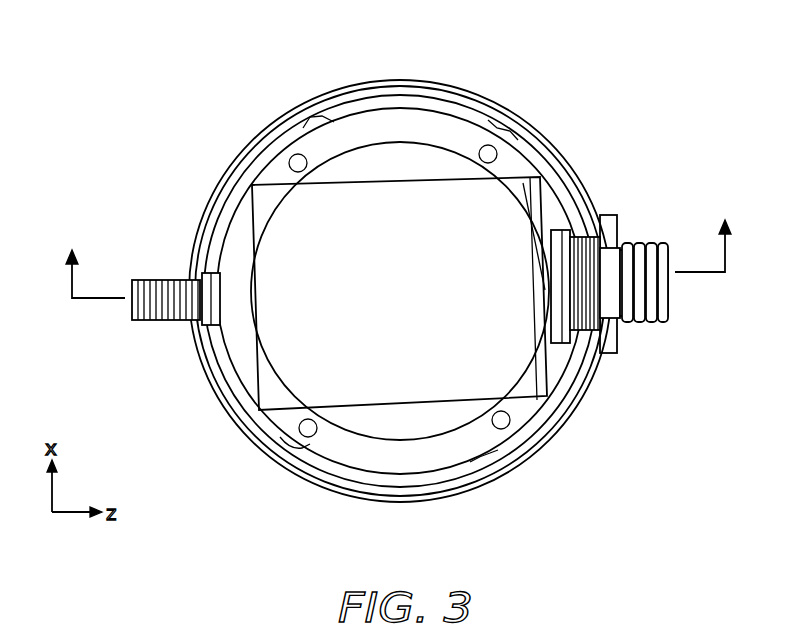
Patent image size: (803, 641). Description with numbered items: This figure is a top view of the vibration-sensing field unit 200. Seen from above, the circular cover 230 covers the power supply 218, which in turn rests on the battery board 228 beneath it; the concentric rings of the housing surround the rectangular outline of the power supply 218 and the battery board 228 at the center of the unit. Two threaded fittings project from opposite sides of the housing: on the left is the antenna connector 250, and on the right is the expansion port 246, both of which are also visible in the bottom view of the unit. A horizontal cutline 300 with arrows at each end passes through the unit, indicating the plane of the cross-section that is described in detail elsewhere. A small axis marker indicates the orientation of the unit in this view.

The vibration-sensing field unit 200 is at (124, 116).
The cover 230 is at (453, 92).
The battery board 228 is at (453, 457).
The power supply 218 is at (515, 188).
The antenna connector 250 is at (160, 320).
The expansion port 246 is at (668, 322).
The cutline 300 is at (398, 243).